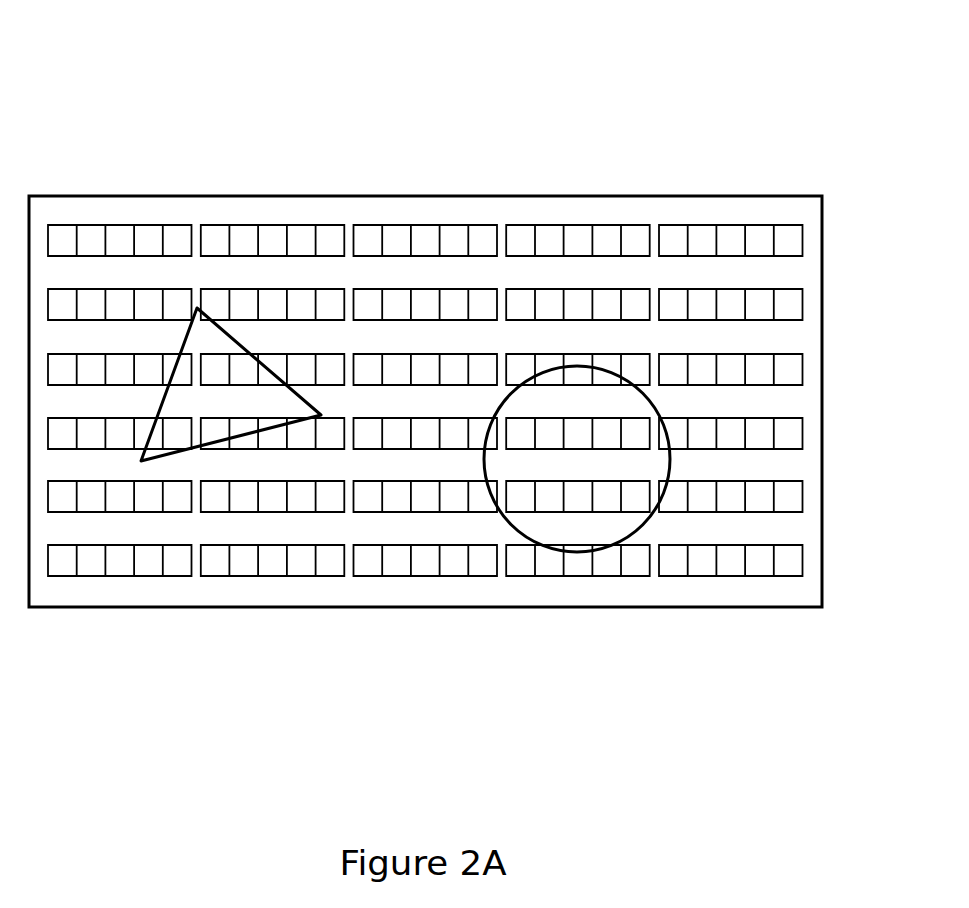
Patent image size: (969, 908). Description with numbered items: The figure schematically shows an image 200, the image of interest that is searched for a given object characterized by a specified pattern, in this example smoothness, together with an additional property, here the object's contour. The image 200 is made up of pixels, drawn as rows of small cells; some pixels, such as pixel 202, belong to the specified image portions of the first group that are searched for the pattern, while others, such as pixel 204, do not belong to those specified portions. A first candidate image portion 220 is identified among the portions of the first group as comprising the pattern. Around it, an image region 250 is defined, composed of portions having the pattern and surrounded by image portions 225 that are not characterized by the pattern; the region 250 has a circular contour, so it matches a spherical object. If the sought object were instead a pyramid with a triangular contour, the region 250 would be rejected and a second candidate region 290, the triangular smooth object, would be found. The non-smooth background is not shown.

The image 200 is at (452, 348).
The pixel 202 is at (67, 233).
The pixel 204 is at (197, 232).
The first candidate image portion 220 is at (577, 512).
The image portions 225 is at (793, 357).
The image region 250 is at (652, 522).
The second candidate region 290 is at (188, 457).